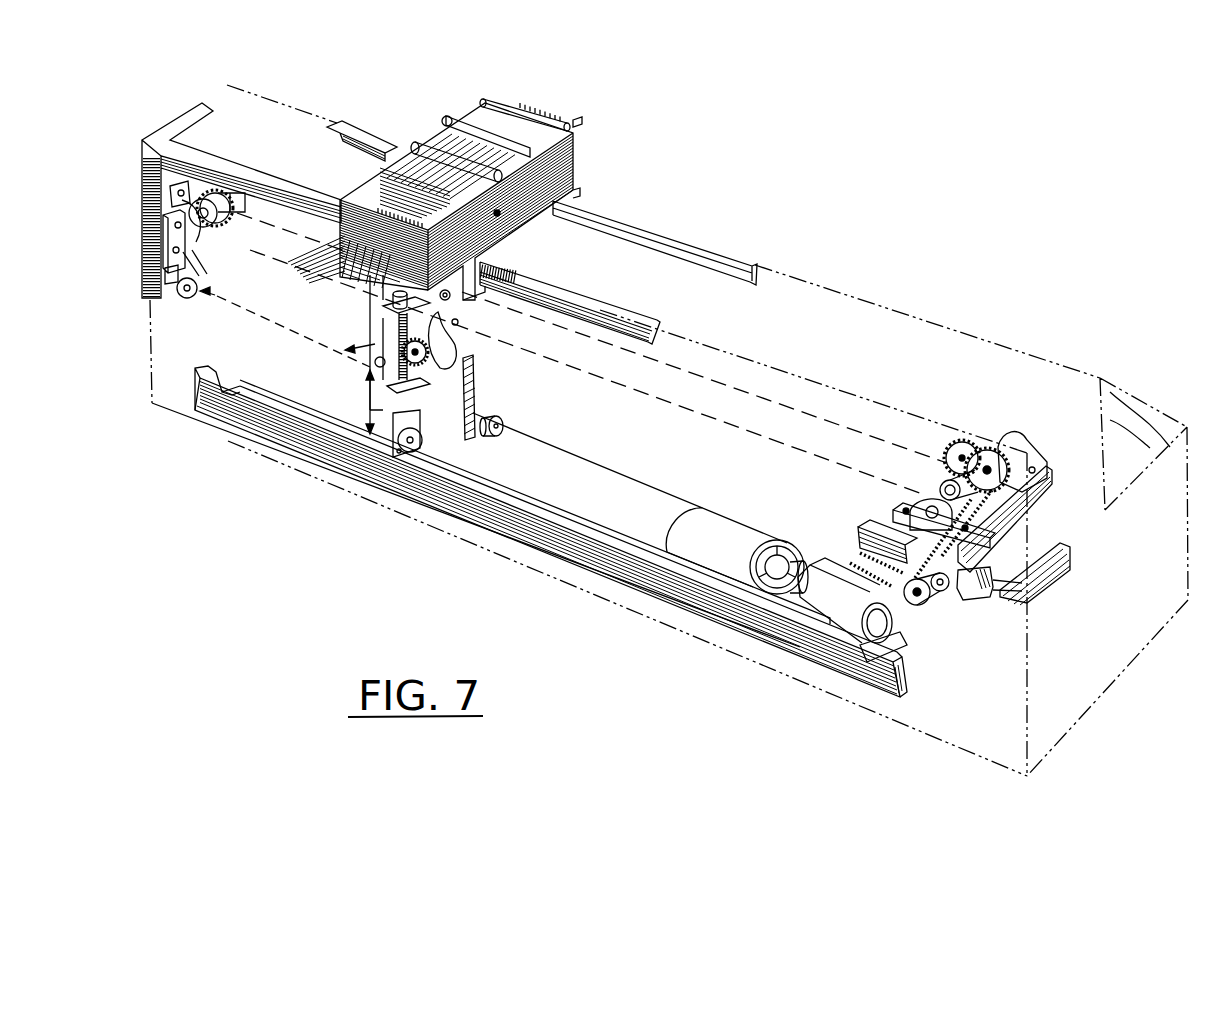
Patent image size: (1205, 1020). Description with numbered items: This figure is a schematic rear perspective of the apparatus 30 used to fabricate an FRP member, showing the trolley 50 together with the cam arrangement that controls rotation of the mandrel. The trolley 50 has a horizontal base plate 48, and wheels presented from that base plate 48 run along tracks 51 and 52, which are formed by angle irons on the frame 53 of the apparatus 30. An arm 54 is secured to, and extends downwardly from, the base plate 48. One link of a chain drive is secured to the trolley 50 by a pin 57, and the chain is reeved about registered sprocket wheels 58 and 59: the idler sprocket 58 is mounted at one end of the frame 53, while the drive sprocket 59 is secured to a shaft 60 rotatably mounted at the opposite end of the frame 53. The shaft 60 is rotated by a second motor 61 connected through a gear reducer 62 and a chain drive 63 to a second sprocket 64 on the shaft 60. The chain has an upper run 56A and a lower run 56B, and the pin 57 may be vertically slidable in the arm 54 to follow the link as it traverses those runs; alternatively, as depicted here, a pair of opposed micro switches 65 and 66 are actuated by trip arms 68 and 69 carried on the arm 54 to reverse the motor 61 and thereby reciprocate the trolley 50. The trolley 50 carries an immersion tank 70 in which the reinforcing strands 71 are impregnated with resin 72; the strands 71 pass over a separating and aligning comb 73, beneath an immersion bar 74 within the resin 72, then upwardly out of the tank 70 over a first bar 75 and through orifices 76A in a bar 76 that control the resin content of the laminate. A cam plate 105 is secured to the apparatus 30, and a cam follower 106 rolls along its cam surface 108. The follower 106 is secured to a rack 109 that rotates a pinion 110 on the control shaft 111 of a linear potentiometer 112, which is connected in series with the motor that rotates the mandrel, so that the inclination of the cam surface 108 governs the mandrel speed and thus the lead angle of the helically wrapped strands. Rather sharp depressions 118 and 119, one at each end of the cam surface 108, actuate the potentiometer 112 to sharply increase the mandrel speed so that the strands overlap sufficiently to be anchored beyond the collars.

The apparatus 30 is at (704, 712).
The horizontal base plate 48 is at (580, 190).
The trolley 50 is at (183, 336).
The track 51 is at (643, 313).
The track 52 is at (710, 253).
The frame 53 is at (190, 128).
The arm 54 is at (472, 400).
The upper run 56A is at (693, 370).
The lower run 56B is at (683, 407).
The pin 57 is at (447, 300).
The idler sprocket 58 is at (243, 205).
The drive sprocket 59 is at (947, 470).
The shaft 60 is at (1000, 443).
The second motor 61 is at (713, 533).
The gear reducer 62 is at (847, 620).
The chain drive 63 is at (905, 585).
The second sprocket 64 is at (970, 447).
The micro switch 65 is at (158, 250).
The micro switch 66 is at (973, 593).
The trip arm 68 is at (380, 363).
The trip arm 69 is at (495, 430).
The immersion tank 70 is at (577, 162).
The reinforcing strands 71 is at (515, 103).
The resin 72 is at (417, 188).
The separating and aligning comb 73 is at (343, 197).
The immersion bar 74 is at (497, 213).
The first bar 75 is at (440, 143).
The bar 76 is at (450, 118).
The orifices 76A is at (472, 133).
The cam plate 105 is at (557, 540).
The cam follower 106 is at (423, 453).
The cam surface 108 is at (560, 512).
The rack 109 is at (403, 323).
The pinion 110 is at (467, 367).
The control shaft 111 is at (387, 350).
The linear potentiometer 112 is at (460, 333).
The depression 118 is at (230, 400).
The depression 119 is at (903, 663).